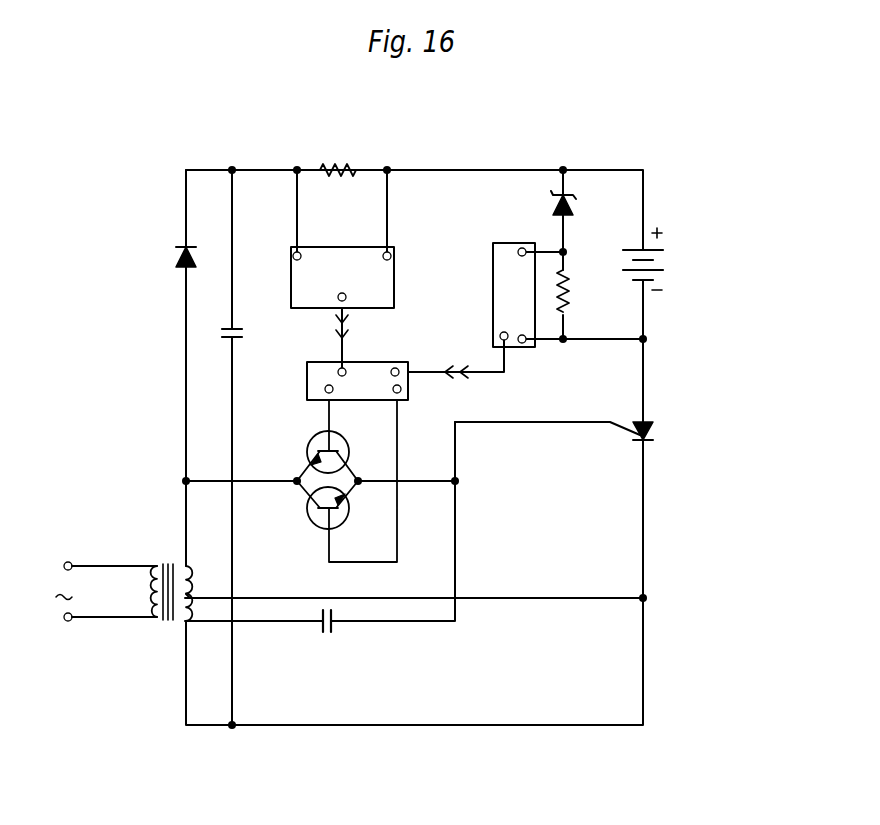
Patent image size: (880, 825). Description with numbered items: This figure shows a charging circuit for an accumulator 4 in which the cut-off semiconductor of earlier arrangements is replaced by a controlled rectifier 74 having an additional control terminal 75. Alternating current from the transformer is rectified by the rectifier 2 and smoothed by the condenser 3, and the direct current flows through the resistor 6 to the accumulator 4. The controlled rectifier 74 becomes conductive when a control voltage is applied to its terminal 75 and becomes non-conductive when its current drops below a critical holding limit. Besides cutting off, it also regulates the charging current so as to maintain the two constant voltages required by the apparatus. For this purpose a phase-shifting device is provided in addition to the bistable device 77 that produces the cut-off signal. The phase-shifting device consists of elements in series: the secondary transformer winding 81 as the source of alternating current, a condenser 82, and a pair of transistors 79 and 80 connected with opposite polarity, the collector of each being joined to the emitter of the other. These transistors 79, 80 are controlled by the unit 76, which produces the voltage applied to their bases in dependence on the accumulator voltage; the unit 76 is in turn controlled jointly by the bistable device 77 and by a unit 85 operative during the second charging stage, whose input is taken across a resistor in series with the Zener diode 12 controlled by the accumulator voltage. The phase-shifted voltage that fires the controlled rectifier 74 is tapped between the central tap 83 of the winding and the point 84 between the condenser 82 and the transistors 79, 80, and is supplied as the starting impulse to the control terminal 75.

The rectifier 2 is at (175, 259).
The condenser 3 is at (226, 333).
The accumulator 4 is at (663, 262).
The resistor 6 is at (341, 162).
The Zener diode 12 is at (577, 208).
The controlled rectifier 74 is at (656, 430).
The control terminal 75 is at (620, 432).
The unit 76 is at (310, 382).
The bistable device 77 is at (302, 273).
The transistor 79 is at (310, 446).
The transistor 80 is at (308, 518).
The secondary transformer winding 81 is at (178, 630).
The condenser 82 is at (328, 636).
The central tap 83 is at (192, 595).
The point 84 is at (459, 486).
The unit 85 is at (492, 270).